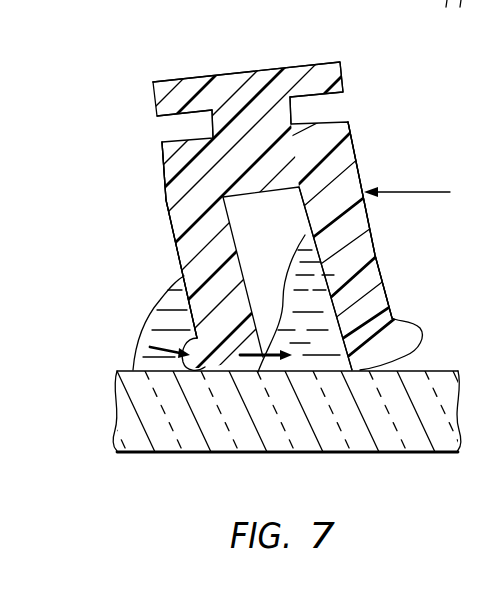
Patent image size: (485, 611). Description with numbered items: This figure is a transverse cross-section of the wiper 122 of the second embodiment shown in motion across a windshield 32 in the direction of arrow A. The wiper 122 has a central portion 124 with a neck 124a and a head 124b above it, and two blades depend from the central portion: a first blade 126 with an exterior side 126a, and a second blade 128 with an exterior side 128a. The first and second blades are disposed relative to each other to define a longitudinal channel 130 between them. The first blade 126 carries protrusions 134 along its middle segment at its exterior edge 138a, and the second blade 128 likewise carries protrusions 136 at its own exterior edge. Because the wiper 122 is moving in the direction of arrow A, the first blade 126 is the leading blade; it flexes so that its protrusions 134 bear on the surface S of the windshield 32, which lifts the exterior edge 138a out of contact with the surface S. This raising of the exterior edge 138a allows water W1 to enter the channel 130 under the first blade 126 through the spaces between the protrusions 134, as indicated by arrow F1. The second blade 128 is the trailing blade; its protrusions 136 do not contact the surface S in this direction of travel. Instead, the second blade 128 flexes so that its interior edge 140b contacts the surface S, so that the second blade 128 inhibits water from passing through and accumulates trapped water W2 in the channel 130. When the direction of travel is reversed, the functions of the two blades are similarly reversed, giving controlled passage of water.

The wiper 122 is at (286, 242).
The central portion 124 is at (279, 242).
The neck 124a is at (240, 123).
The head 124b is at (255, 82).
The first blade 126 is at (198, 228).
The exterior side 126a is at (177, 233).
The second blade 128 is at (362, 237).
The exterior side 128a is at (458, 268).
The longitudinal channel 130 is at (282, 233).
The protrusions 134 is at (182, 276).
The protrusions 136 is at (406, 323).
The exterior edge 138a is at (287, 256).
The windshield 32 is at (287, 437).
The interior edge 140b is at (404, 454).
The surface S is at (433, 370).
The arrow A is at (410, 187).
The water W1 is at (182, 312).
The trapped water W2 is at (297, 291).
The arrow F1 is at (291, 454).